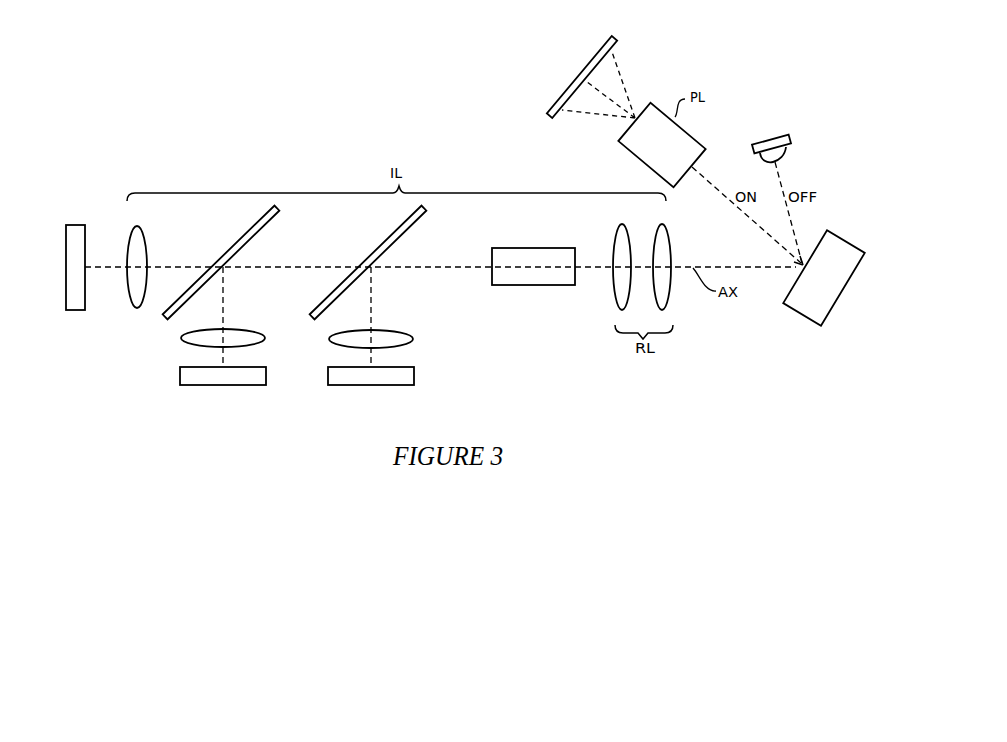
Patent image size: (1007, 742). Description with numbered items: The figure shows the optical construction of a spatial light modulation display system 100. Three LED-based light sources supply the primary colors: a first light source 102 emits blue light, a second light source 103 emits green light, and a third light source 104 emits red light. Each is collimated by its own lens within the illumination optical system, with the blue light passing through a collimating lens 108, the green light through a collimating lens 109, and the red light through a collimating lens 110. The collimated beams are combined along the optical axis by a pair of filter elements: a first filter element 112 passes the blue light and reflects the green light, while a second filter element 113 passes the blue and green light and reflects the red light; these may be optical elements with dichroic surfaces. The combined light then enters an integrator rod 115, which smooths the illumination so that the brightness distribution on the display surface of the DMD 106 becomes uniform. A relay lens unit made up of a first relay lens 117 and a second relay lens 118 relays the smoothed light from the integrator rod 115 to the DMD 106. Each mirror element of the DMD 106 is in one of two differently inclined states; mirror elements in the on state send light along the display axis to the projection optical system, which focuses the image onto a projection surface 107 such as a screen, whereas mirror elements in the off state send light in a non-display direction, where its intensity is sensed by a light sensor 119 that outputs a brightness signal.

The spatial light modulation display system 100 is at (446, 133).
The first light source 102 is at (66, 248).
The second light source 103 is at (266, 372).
The third light source 104 is at (414, 372).
The DMD 106 is at (842, 238).
The projection surface 107 is at (615, 42).
The collimating lens 108 is at (146, 248).
The collimating lens 109 is at (253, 333).
The collimating lens 110 is at (405, 333).
The first filter element 112 is at (267, 225).
The second filter element 113 is at (412, 225).
The integrator rod 115 is at (575, 285).
The first relay lens 117 is at (617, 243).
The second relay lens 118 is at (672, 247).
The light sensor 119 is at (790, 140).